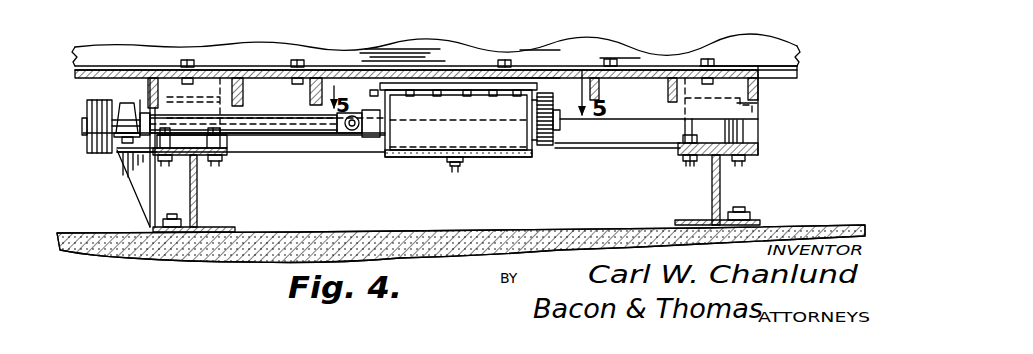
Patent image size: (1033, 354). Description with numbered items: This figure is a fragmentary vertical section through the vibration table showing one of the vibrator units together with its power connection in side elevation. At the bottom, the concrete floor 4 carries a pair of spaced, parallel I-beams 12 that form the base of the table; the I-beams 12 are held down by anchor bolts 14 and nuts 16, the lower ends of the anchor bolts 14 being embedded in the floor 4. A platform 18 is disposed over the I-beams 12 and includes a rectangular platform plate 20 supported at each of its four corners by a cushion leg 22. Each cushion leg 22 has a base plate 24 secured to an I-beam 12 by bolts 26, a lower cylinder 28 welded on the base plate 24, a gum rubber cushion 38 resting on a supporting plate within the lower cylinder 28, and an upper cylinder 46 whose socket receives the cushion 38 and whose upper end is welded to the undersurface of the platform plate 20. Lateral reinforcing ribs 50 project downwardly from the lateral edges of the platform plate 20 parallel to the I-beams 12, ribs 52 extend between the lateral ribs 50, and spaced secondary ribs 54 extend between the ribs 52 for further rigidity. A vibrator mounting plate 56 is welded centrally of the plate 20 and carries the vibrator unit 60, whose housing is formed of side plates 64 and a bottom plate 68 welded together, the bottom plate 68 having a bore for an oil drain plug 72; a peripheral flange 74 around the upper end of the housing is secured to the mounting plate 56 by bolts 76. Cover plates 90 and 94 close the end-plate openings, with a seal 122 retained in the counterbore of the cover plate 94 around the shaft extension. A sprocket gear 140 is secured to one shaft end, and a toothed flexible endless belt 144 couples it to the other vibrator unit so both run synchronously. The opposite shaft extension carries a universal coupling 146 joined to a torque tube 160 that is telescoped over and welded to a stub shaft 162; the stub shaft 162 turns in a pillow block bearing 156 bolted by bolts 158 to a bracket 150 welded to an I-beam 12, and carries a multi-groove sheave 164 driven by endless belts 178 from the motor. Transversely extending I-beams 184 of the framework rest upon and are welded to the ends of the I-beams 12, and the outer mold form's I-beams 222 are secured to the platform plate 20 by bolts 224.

The concrete floor 4 is at (340, 231).
The I-beams 12 is at (722, 170).
The anchor bolts 14 is at (742, 211).
The nuts 16 is at (749, 215).
The platform 18 is at (639, 57).
The platform plate 20 is at (735, 64).
The cushion leg 22 is at (680, 128).
The base plate 24 is at (215, 166).
The bolts 26 is at (690, 162).
The lower cylinder 28 is at (742, 128).
The cushion 38 is at (756, 113).
The upper cylinder 46 is at (759, 92).
The lateral reinforcing ribs 50 is at (165, 72).
The ribs 52 is at (575, 120).
The secondary ribs 54 is at (246, 90).
The vibrator mounting plate 56 is at (566, 68).
The vibrator unit 60 is at (508, 162).
The side plates 64 is at (439, 143).
The bottom plate 68 is at (430, 160).
The oil drain plug 72 is at (457, 170).
The peripheral flange 74 is at (457, 90).
The bolts 76 is at (397, 93).
The cover plate 90 is at (392, 132).
The cover plate 94 is at (540, 147).
The seal 122 is at (530, 122).
The sprocket gear 140 is at (557, 140).
The toothed flexible endless belt 144 is at (530, 102).
The universal coupling 146 is at (366, 137).
The bracket 150 is at (138, 193).
The pillow block bearing 156 is at (128, 103).
The bolts 158 is at (123, 143).
The torque tube 160 is at (307, 134).
The stub shaft 162 is at (83, 120).
The multi-groove sheave 164 is at (87, 147).
The endless belts 178 is at (93, 100).
The transversely extending I-beams 184 is at (632, 150).
The I-beams 222 is at (222, 52).
The bolts 224 is at (297, 60).